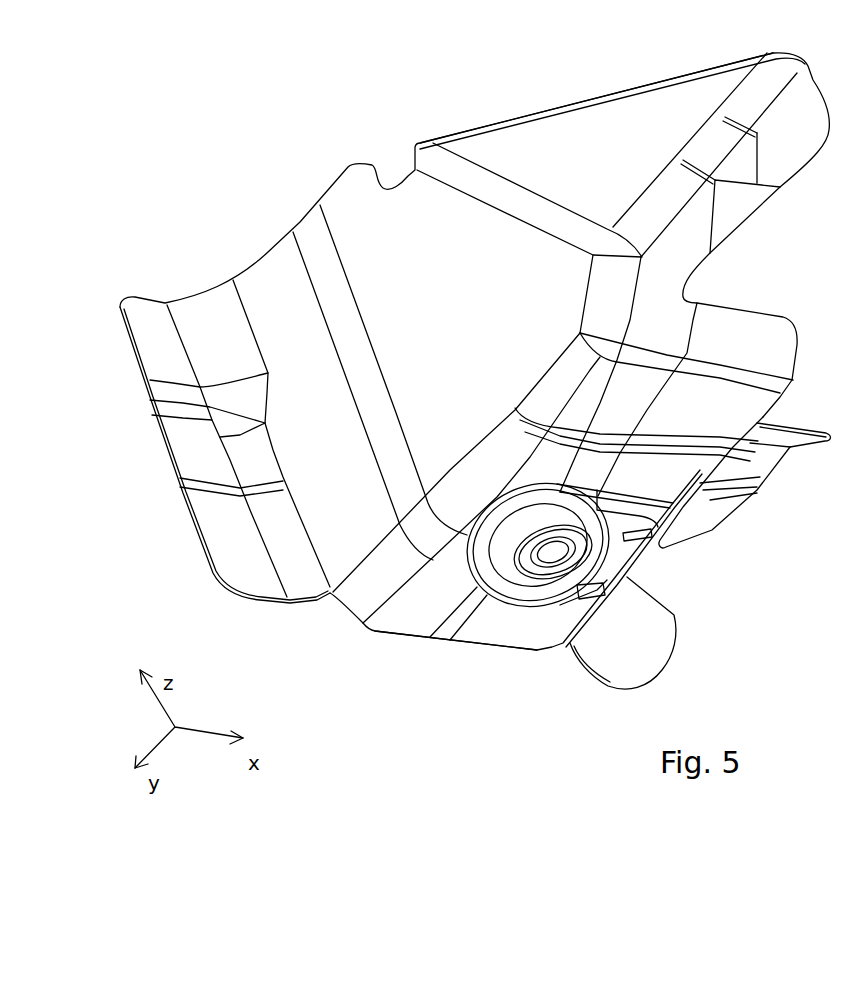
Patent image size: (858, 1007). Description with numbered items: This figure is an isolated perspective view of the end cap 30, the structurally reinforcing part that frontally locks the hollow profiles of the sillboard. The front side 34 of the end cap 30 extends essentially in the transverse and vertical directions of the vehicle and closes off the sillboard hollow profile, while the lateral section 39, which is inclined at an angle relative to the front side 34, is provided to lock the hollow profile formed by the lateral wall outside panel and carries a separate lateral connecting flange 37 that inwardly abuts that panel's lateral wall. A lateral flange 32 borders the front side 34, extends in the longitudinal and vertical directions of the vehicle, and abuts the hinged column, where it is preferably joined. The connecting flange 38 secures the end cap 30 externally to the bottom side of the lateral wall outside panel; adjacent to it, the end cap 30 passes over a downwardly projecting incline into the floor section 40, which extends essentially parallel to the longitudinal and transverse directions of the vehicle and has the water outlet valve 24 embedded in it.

The water outlet valve 24 is at (538, 592).
The end cap 30 is at (340, 664).
The lateral flange 32 is at (210, 513).
The front side 34 is at (268, 277).
The lateral connecting flange 37 is at (788, 160).
The connecting flange 38 is at (753, 493).
The lateral section 39 is at (622, 123).
The floor section 40 is at (480, 620).